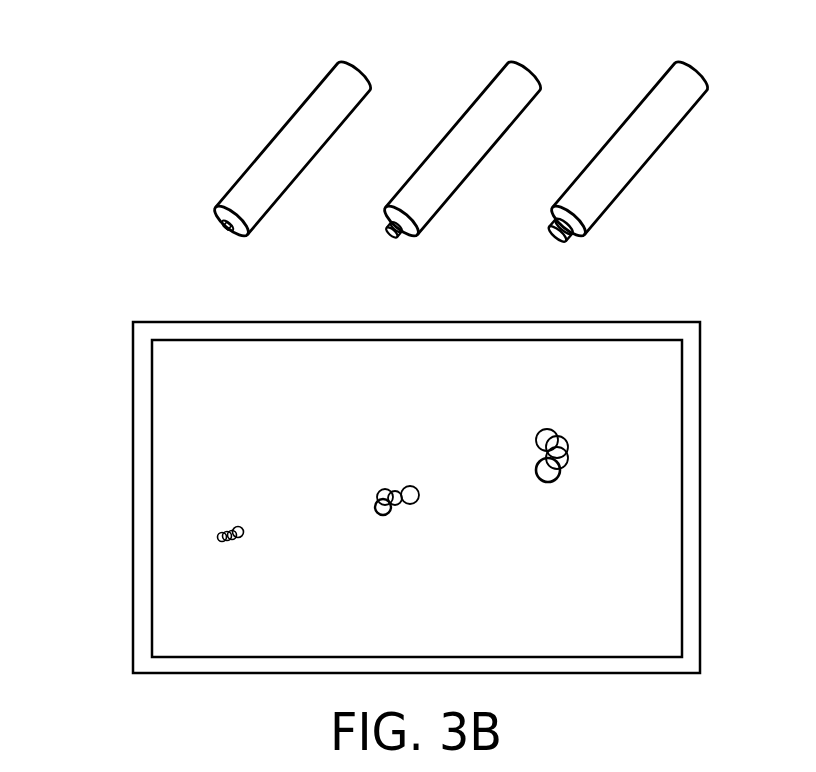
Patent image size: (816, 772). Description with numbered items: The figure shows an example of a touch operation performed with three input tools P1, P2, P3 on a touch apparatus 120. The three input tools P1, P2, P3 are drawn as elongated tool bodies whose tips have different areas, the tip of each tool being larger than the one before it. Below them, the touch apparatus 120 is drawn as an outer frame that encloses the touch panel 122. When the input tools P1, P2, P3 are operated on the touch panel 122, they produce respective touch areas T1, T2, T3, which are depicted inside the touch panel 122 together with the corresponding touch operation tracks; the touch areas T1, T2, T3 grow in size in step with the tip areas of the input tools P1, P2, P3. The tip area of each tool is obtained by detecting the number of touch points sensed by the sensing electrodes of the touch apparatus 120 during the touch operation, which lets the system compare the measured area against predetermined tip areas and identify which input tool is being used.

The input tool P1 is at (312, 110).
The input tool P2 is at (493, 110).
The input tool P3 is at (658, 110).
The touch area T1 is at (229, 559).
The touch area T2 is at (397, 523).
The touch area T3 is at (554, 477).
The touch apparatus 120 is at (133, 399).
The touch panel 122 is at (152, 470).